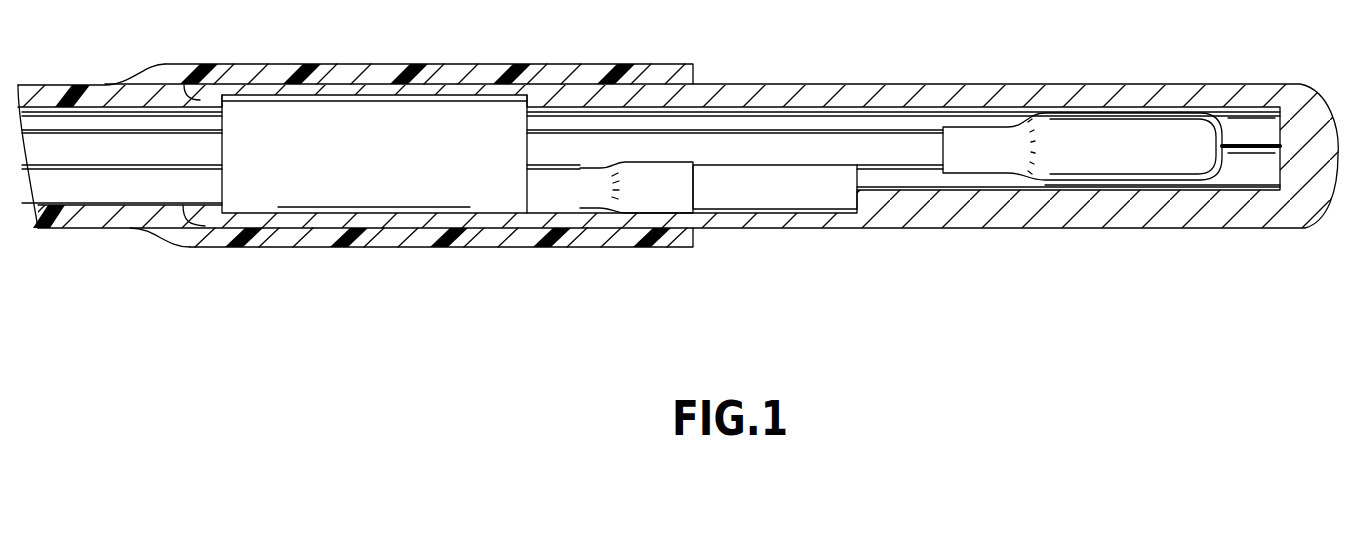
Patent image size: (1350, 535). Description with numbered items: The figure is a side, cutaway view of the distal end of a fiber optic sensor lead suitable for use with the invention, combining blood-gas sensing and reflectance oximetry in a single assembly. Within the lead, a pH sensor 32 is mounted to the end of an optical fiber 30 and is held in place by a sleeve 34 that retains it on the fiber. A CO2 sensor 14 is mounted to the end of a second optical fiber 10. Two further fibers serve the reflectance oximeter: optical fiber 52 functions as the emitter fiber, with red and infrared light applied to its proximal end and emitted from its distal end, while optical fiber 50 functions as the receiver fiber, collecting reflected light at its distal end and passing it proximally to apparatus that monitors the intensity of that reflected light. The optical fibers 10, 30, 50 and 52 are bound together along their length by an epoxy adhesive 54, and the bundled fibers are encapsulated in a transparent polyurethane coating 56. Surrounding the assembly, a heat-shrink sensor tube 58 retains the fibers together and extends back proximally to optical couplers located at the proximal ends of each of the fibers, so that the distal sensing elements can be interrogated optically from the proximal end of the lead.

The second optical fiber 10 is at (128, 147).
The CO2 sensor 14 is at (1120, 142).
The optical fiber 30 is at (138, 183).
The pH sensor 32 is at (805, 195).
The sleeve 34 is at (648, 193).
The optical fiber 50 is at (1243, 163).
The optical fiber 52 is at (55, 110).
The epoxy adhesive 54 is at (370, 185).
The transparent polyurethane coating 56 is at (710, 90).
The heat-shrink sensor tube 58 is at (388, 72).